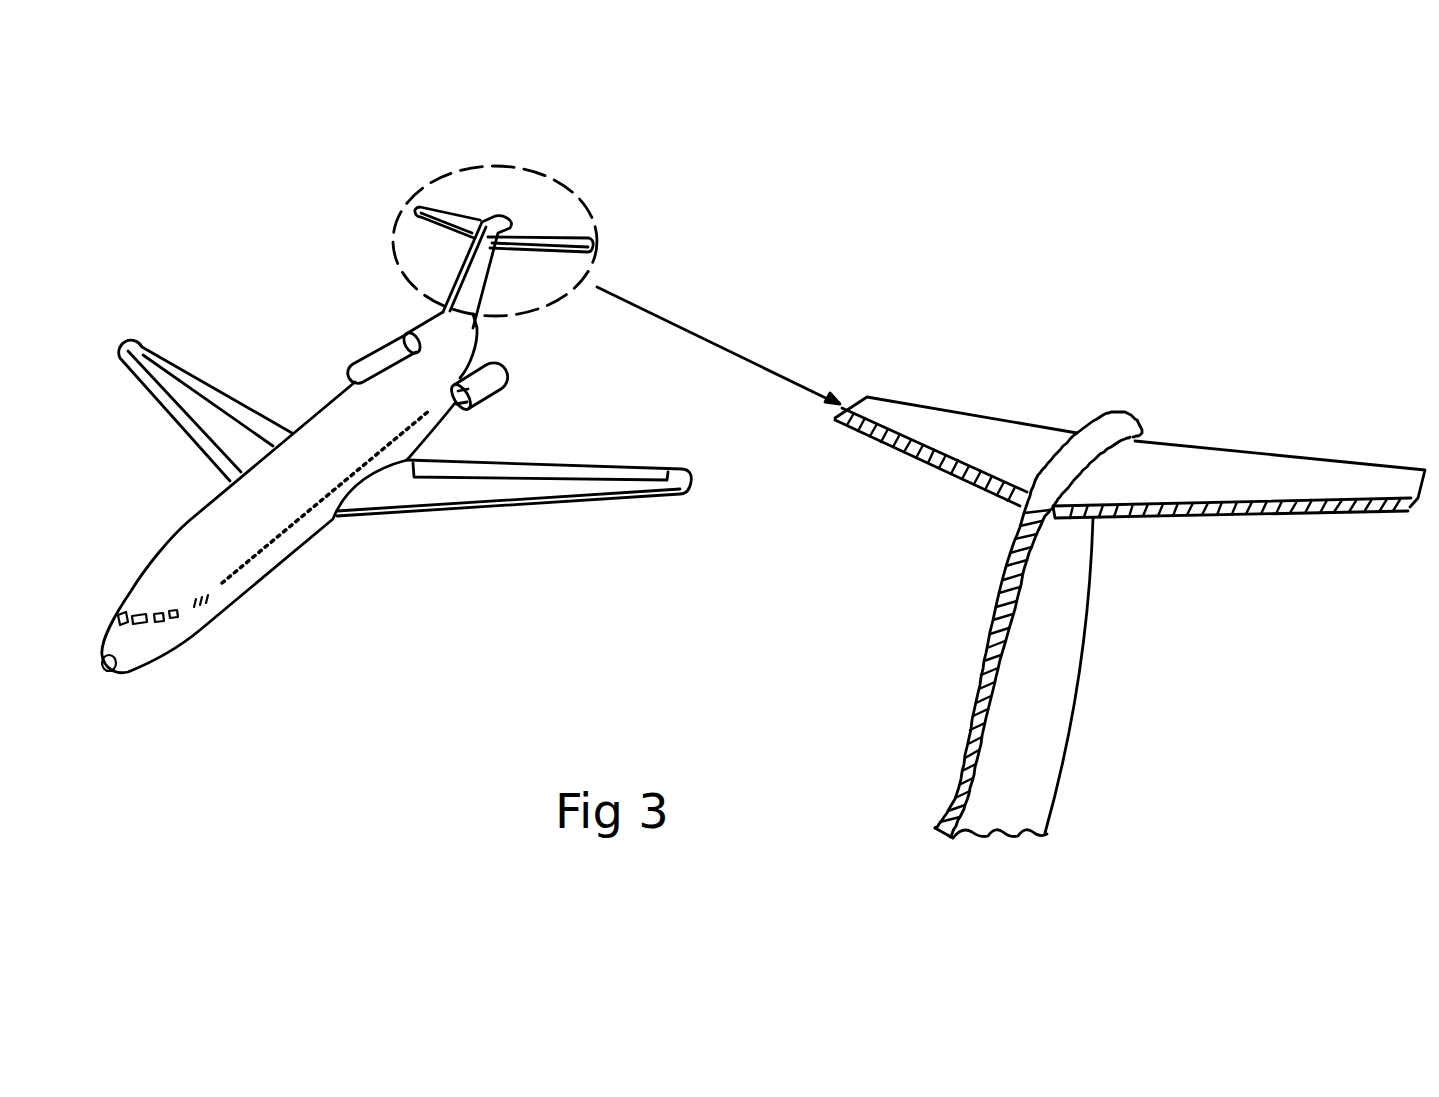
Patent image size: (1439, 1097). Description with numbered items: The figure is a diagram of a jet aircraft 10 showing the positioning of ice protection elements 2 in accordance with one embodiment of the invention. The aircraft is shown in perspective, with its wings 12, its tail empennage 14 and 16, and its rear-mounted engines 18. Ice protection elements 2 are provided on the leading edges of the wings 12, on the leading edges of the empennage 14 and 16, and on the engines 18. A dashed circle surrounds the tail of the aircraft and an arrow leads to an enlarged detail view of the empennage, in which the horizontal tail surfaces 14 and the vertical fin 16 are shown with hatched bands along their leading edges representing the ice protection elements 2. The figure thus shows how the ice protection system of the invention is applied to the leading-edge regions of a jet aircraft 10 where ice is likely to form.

The ice protection element 2 is at (207, 447).
The jet aircraft 10 is at (284, 580).
The wing 12 is at (175, 392).
The empennage 14 is at (950, 433).
The empennage 16 is at (1060, 655).
The engine 18 is at (500, 367).